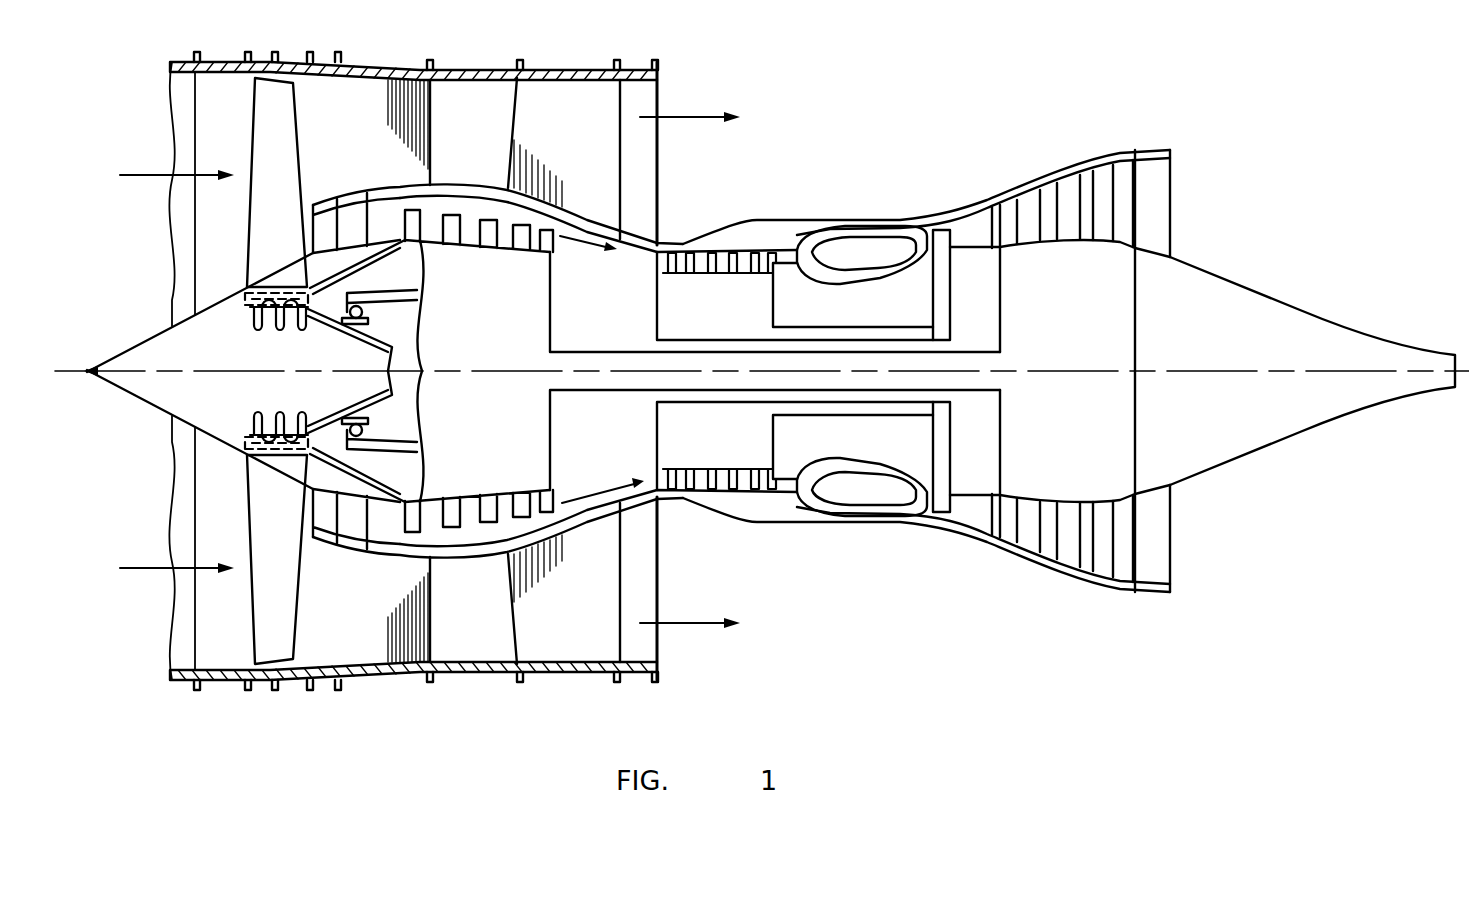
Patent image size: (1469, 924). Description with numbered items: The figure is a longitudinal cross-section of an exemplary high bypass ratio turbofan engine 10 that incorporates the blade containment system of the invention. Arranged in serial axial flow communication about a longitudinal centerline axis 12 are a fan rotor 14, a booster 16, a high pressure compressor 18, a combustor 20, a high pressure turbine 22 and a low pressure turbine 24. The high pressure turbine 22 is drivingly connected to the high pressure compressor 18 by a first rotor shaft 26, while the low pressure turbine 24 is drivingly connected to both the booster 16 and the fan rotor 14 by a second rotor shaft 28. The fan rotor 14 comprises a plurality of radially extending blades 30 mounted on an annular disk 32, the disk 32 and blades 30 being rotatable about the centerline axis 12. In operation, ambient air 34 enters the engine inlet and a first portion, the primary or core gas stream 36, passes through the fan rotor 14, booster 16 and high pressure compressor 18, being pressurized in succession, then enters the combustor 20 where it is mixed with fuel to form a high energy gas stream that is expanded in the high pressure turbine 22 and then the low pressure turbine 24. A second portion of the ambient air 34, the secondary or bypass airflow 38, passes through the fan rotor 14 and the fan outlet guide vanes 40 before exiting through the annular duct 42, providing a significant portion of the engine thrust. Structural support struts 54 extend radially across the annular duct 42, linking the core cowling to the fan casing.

The high bypass ratio turbofan engine 10 is at (820, 203).
The longitudinal centerline axis 12 is at (1178, 371).
The fan rotor 14 is at (308, 102).
The booster 16 is at (413, 215).
The high pressure compressor 18 is at (683, 252).
The combustor 20 is at (858, 497).
The high pressure turbine 22 is at (942, 236).
The low pressure turbine 24 is at (1050, 188).
The first rotor shaft 26 is at (937, 304).
The second rotor shaft 28 is at (1000, 328).
The blades 30 is at (284, 164).
The annular disk 32 is at (247, 303).
The ambient air 34 is at (156, 174).
The primary or core gas stream 36 is at (580, 247).
The secondary or bypass airflow 38 is at (672, 117).
The fan outlet guide vanes 40 is at (416, 135).
The annular duct 42 is at (656, 172).
The structural support struts 54 is at (550, 96).